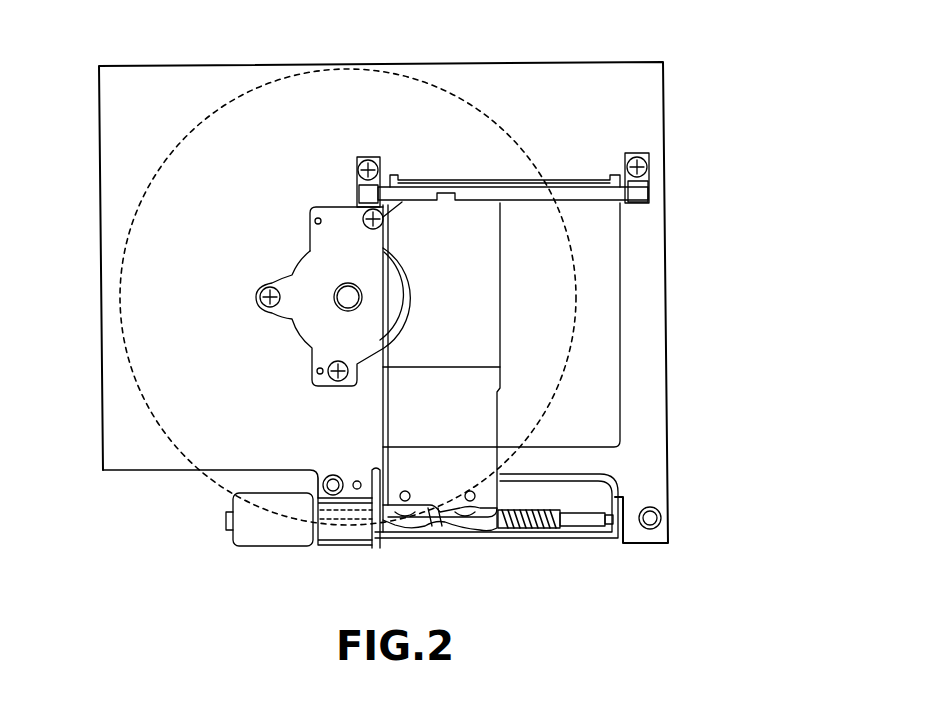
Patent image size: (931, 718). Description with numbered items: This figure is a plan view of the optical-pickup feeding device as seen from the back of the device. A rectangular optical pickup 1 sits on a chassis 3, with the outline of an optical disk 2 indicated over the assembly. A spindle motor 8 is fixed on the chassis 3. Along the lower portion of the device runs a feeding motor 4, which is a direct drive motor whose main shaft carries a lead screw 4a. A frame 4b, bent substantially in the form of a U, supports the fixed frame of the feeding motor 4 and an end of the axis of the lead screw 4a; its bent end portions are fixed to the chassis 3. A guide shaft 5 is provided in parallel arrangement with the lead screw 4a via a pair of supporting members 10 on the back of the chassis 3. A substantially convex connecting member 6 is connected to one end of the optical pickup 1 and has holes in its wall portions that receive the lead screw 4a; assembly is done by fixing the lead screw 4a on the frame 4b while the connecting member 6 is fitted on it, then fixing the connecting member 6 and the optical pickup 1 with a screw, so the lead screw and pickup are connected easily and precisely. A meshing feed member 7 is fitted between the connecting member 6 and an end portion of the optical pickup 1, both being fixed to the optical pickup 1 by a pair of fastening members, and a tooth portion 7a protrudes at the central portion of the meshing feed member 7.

The optical pickup 1 is at (465, 323).
The optical disk 2 is at (237, 481).
The chassis 3 is at (652, 80).
The feeding motor 4 is at (277, 527).
The lead screw 4a is at (558, 528).
The frame 4b is at (515, 543).
The guide shaft 5 is at (618, 200).
The connecting member 6 is at (378, 528).
The meshing feed member 7 is at (476, 525).
The tooth portion 7a is at (434, 524).
The spindle motor 8 is at (312, 253).
The supporting members 10 is at (362, 187).